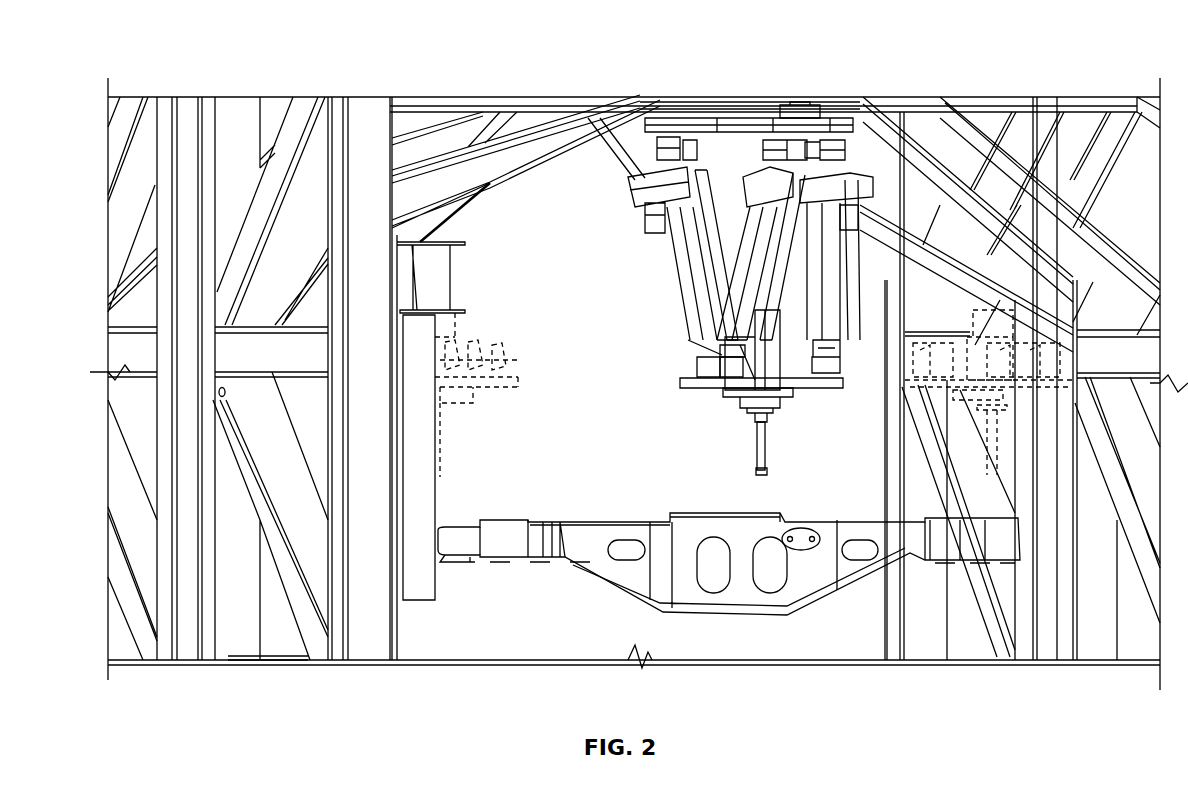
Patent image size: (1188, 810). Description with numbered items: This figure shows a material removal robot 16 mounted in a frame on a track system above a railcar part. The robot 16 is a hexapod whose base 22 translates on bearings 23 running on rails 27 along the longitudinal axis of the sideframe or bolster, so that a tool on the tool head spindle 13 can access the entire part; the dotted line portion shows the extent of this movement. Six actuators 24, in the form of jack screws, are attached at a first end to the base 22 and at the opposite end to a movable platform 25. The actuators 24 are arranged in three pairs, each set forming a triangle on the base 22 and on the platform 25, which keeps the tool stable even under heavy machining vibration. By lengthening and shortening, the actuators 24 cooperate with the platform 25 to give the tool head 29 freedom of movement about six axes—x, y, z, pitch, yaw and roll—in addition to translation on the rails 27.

The tool head spindle 13 is at (757, 452).
The material removal robot 16 is at (736, 250).
The base 22 is at (715, 130).
The bearings 23 is at (812, 115).
The actuators 24 is at (687, 250).
The movable platform 25 is at (700, 390).
The rails 27 is at (843, 105).
The tool head 29 is at (750, 405).